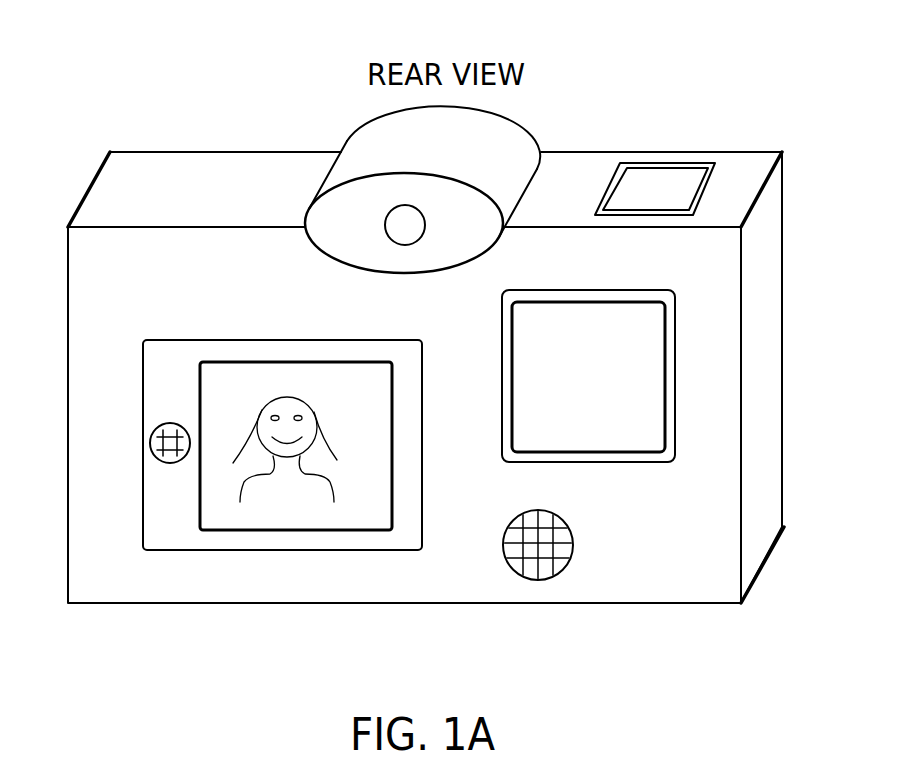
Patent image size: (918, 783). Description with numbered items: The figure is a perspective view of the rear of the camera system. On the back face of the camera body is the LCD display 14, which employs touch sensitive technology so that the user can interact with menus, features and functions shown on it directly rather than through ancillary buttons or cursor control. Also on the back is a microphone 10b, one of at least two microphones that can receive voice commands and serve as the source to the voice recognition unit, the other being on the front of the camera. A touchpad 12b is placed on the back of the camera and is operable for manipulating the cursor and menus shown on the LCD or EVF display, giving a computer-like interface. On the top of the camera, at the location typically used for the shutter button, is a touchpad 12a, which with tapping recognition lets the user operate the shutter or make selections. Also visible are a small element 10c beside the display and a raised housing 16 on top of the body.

The microphone 10b is at (572, 540).
The microphone 10c is at (150, 433).
The touchpad 12a is at (707, 162).
The touchpad 12b is at (642, 463).
The LCD display 14 is at (282, 565).
The viewfinder lens housing 16 is at (333, 255).